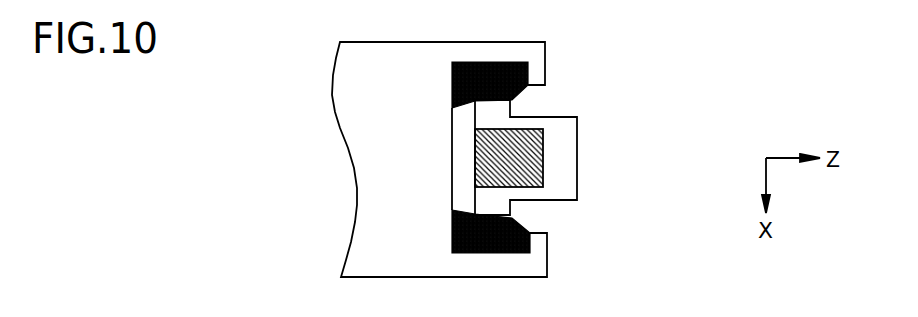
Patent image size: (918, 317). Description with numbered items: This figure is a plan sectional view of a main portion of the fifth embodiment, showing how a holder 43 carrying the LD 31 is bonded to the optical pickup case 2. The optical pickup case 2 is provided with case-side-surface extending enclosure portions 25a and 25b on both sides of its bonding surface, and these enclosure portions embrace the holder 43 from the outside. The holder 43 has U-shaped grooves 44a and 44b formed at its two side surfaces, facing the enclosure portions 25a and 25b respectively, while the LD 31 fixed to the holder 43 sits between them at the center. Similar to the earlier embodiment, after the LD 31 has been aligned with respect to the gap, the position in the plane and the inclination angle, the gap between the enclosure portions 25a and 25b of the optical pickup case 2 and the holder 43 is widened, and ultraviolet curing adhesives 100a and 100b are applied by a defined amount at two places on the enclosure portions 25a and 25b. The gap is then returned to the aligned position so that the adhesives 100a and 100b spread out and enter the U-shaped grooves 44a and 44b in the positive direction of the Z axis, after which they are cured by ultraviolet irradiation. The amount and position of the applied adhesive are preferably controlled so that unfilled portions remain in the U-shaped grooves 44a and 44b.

The optical pickup case 2 is at (360, 176).
The case-side-surface extending enclosure portion 25a is at (538, 52).
The case-side-surface extending enclosure portion 25b is at (538, 263).
The U-shaped groove 44a is at (512, 99).
The U-shaped groove 44b is at (512, 218).
The holder 43 is at (570, 130).
The LD 31 is at (535, 176).
The ultraviolet curing adhesive 100a is at (452, 85).
The ultraviolet curing adhesive 100b is at (452, 233).